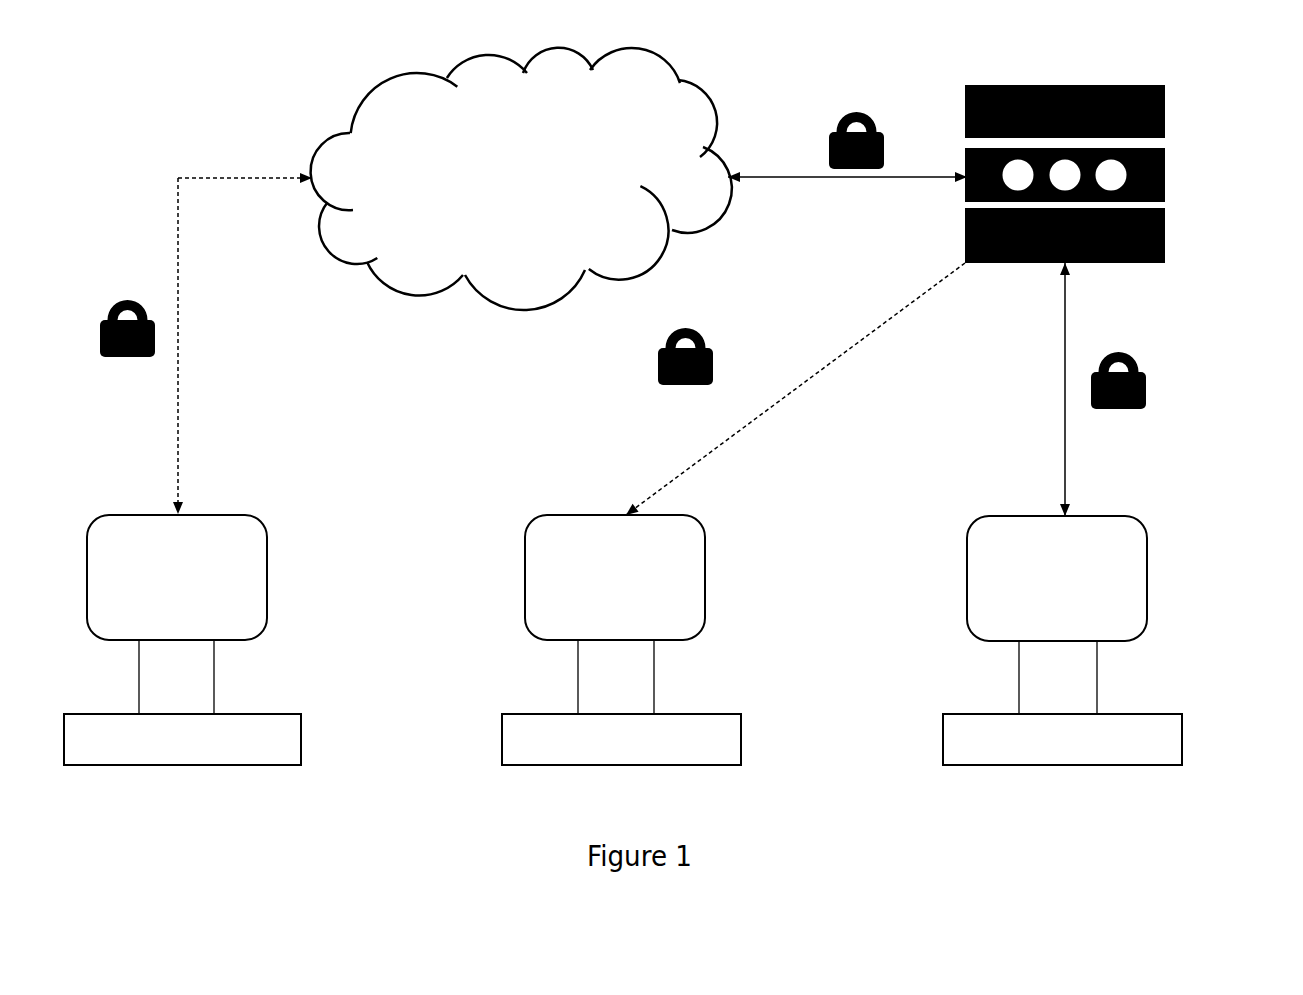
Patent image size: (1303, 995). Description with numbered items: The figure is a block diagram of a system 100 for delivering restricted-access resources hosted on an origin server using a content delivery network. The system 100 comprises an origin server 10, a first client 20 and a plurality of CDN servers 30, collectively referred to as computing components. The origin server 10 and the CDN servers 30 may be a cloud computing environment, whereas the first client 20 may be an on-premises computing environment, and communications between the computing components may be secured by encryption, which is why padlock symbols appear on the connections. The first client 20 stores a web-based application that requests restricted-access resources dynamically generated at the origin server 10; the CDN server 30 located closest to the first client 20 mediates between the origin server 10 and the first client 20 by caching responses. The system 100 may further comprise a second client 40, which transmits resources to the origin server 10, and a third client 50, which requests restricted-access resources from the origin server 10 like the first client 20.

The system 100 is at (95, 148).
The origin server 10 is at (678, 80).
The CDN servers 30 is at (1068, 77).
The second client 40 is at (267, 514).
The third client 50 is at (706, 515).
The first client 20 is at (1148, 516).